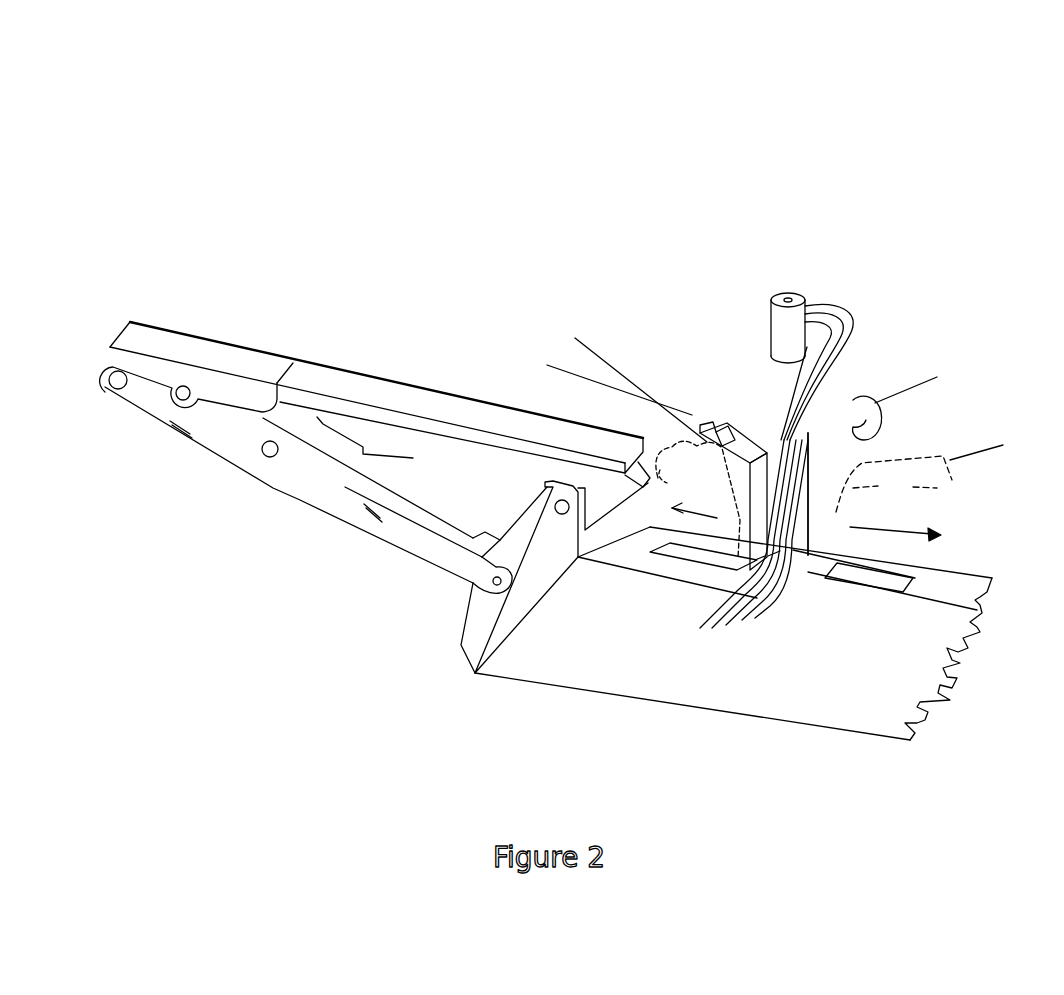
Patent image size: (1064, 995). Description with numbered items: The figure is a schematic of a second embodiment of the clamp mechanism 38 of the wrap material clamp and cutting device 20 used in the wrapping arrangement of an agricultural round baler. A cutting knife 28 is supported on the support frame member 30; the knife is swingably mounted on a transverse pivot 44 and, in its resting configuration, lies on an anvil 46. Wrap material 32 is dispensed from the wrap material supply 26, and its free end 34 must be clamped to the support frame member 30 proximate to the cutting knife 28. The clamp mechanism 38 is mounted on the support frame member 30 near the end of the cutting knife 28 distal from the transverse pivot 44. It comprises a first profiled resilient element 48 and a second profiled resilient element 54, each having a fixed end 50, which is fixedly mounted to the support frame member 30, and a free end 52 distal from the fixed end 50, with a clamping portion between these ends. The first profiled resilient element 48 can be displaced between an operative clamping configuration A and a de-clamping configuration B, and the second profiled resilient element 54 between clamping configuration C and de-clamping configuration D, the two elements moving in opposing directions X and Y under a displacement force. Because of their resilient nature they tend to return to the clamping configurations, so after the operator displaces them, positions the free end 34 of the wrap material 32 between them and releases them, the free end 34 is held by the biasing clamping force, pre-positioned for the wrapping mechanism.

The wrap material clamp and cutting device 20 is at (408, 182).
The wrap material supply 26 is at (770, 306).
The cutting knife 28 is at (443, 400).
The support frame member 30 is at (648, 670).
The wrap material 32 is at (787, 417).
The free end 34 is at (752, 592).
The clamp mechanism 38 is at (266, 294).
The transverse pivot 44 is at (114, 386).
The anvil 46 is at (412, 456).
The first profiled resilient element 48 is at (818, 575).
The fixed end 50 is at (740, 575).
The free end 52 is at (722, 430).
The second profiled resilient element 54 is at (728, 545).